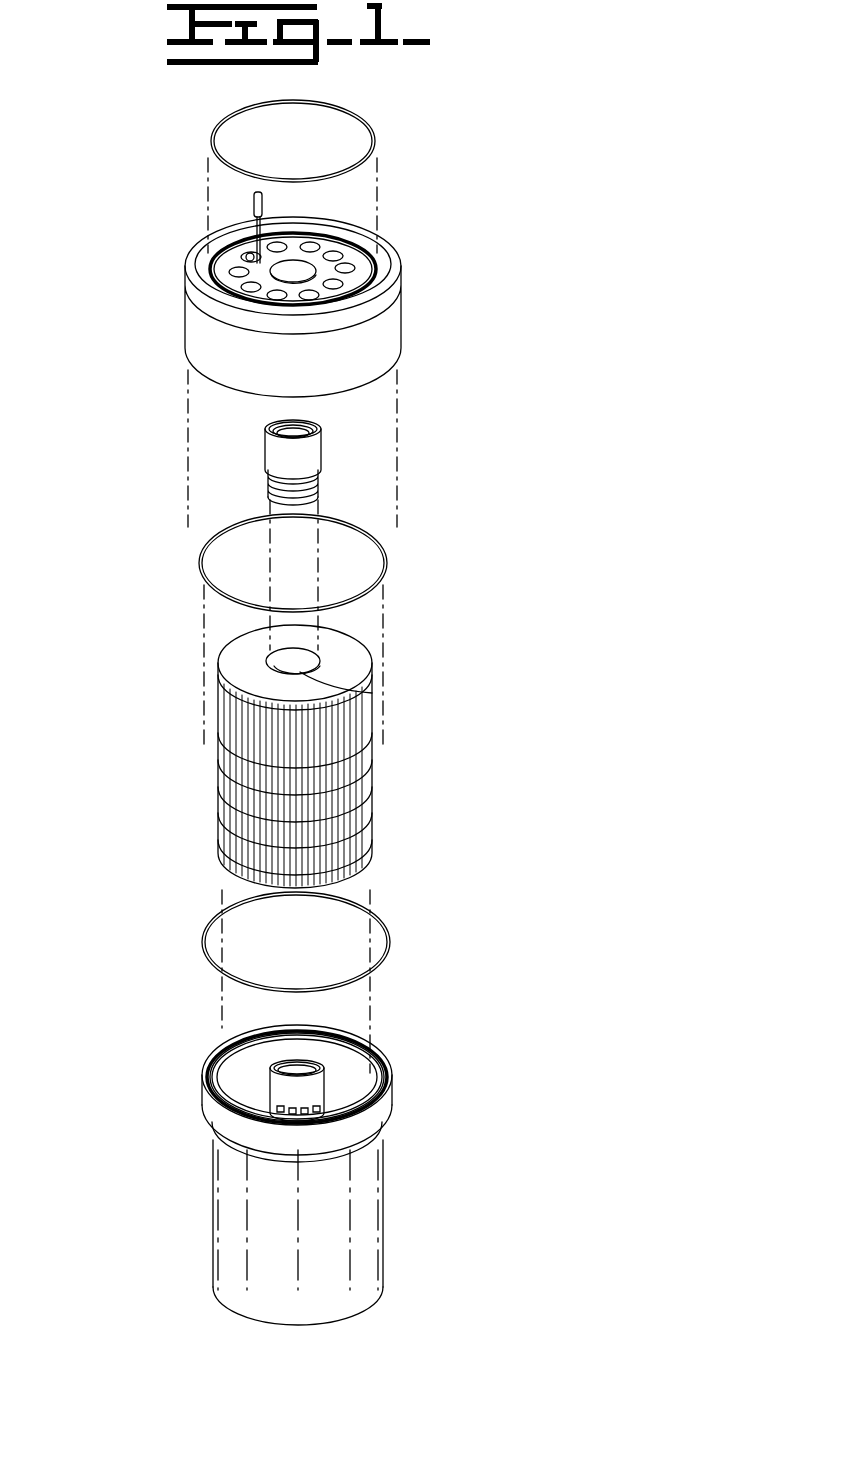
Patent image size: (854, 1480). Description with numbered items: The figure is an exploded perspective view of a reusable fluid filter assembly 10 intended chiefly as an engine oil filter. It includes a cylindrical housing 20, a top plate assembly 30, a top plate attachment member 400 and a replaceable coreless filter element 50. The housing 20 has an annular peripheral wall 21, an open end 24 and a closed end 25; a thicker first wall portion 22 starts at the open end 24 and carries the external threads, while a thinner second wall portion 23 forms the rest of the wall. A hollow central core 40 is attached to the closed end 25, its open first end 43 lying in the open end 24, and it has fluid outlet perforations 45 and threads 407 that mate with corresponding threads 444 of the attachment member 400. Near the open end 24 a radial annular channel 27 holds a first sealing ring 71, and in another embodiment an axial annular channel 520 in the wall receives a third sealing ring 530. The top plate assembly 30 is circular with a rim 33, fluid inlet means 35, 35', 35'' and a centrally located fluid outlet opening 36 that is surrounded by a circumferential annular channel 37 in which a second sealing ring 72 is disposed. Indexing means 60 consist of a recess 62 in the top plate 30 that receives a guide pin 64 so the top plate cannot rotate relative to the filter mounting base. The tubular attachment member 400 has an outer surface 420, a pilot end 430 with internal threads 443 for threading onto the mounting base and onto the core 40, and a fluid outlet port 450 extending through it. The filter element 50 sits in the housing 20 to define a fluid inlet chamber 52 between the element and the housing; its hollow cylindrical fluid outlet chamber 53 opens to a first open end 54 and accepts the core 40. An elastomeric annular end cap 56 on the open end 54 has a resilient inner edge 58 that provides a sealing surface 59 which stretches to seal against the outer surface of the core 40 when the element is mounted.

The reusable fluid filter assembly 10 is at (286, 1137).
The cylindrical housing 20 is at (340, 1213).
The annular peripheral wall 21 is at (383, 1268).
The first wall portion 22 is at (380, 1122).
The second wall portion 23 is at (383, 1163).
The open end 24 is at (400, 1058).
The closed end 25 is at (383, 1312).
The radial annular channel 27 is at (360, 1180).
The top plate assembly 30 is at (304, 275).
The rim 33 is at (398, 380).
The fluid inlet means 35 is at (363, 271).
The fluid inlet means 35' is at (412, 236).
The fluid inlet means 35'' is at (402, 216).
The fluid outlet opening 36 is at (317, 276).
The circumferential annular channel 37 is at (227, 283).
The hollow central core 40 is at (314, 1137).
The open first end 43 is at (272, 1062).
The fluid outlet perforations 45 is at (233, 1107).
The replaceable coreless filter element 50 is at (327, 748).
The fluid inlet chamber 52 is at (382, 1043).
The hollow cylindrical fluid outlet chamber 53 is at (268, 660).
The first open end 54 is at (232, 640).
The annular end cap 56 is at (248, 676).
The resilient inner edge 58 is at (330, 660).
The sealing surface 59 is at (372, 693).
The indexing means 60 is at (145, 230).
The recess 62 is at (247, 258).
The guide pin 64 is at (253, 208).
The first sealing ring 71 is at (389, 560).
The second sealing ring 72 is at (362, 116).
The top plate attachment member 400 is at (342, 462).
The threads 407 is at (270, 1088).
The outer surface 420 is at (268, 468).
The pilot end 430 is at (272, 426).
The internal threads 443 is at (270, 446).
The threads 444 is at (320, 494).
The fluid outlet port 450 is at (285, 518).
The axial annular channel 520 is at (335, 1033).
The third sealing ring 530 is at (385, 920).